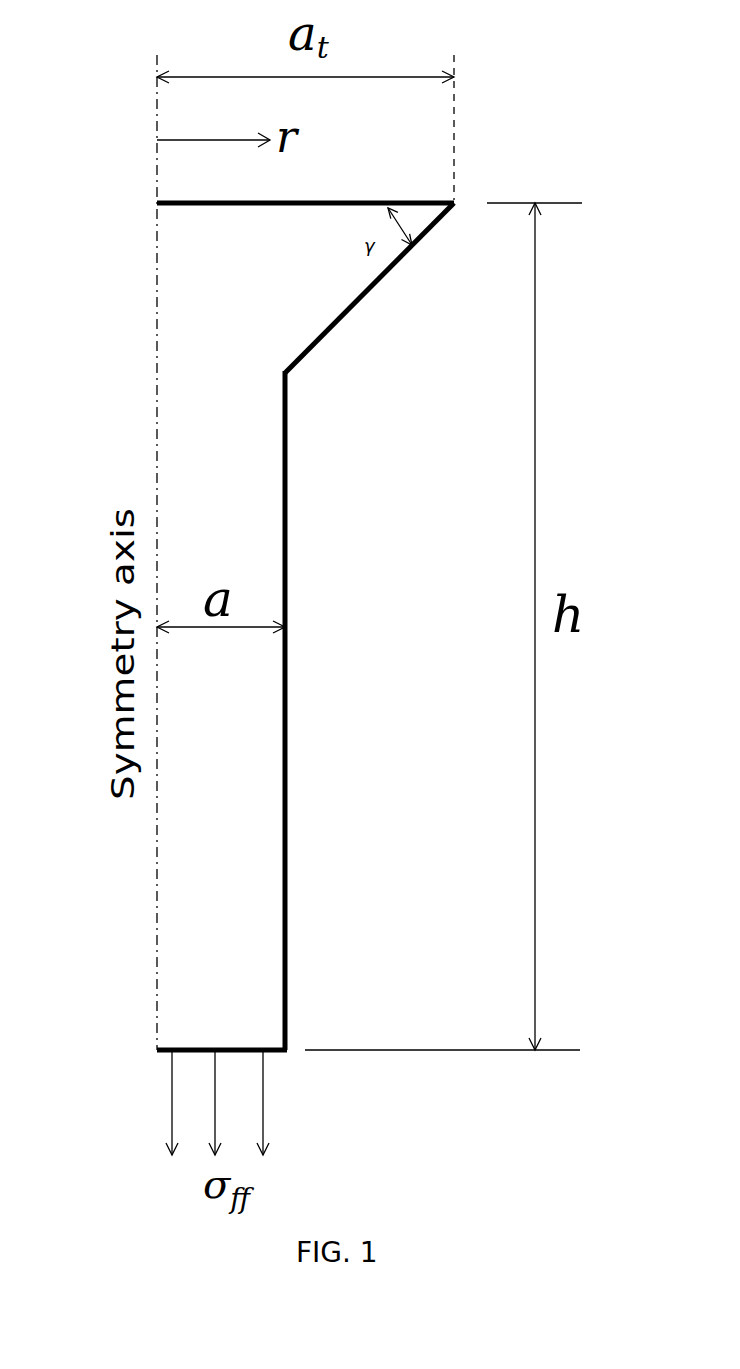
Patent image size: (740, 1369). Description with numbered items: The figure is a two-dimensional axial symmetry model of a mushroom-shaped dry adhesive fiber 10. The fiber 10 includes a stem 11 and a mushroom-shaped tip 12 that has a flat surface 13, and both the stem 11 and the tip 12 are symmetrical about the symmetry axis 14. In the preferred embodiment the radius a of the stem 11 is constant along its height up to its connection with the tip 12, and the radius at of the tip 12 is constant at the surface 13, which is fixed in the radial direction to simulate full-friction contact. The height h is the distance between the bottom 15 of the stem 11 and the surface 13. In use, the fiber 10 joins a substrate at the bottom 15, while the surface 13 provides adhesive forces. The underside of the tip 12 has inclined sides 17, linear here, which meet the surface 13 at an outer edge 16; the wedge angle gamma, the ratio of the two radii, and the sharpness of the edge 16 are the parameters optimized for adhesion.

The mushroom-shaped fiber 10 is at (582, 84).
The stem 11 is at (278, 780).
The mushroom-shaped tip 12 is at (348, 312).
The flat surface 13 is at (380, 193).
The symmetry axis 14 is at (155, 483).
The bottom 15 is at (280, 1053).
The outer edge 16 is at (455, 205).
The inclined sides 17 is at (385, 275).